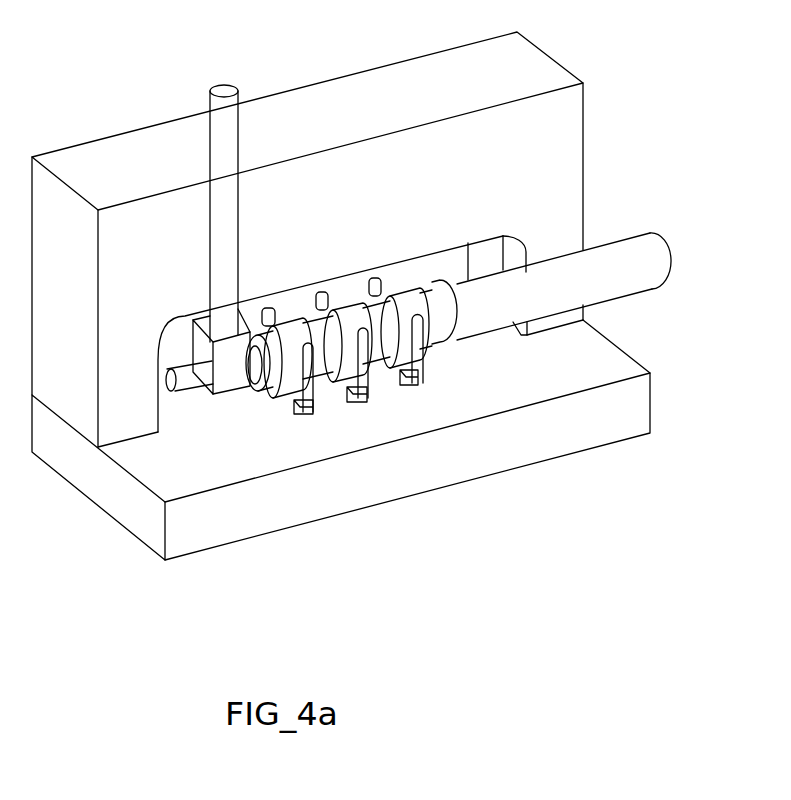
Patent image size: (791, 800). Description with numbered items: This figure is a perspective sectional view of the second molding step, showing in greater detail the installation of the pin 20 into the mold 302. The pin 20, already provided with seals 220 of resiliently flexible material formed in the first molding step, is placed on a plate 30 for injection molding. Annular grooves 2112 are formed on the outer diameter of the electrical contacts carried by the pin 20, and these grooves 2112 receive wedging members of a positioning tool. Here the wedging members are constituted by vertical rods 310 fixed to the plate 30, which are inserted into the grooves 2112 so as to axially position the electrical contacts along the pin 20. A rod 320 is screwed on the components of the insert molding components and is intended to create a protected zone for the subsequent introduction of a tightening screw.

The pin 20 is at (607, 230).
The plate 30 is at (601, 430).
The mold 302 is at (557, 150).
The rod 320 is at (217, 113).
The seals 220 is at (273, 385).
The vertical rods 310 is at (313, 372).
The annular grooves 2112 is at (295, 285).